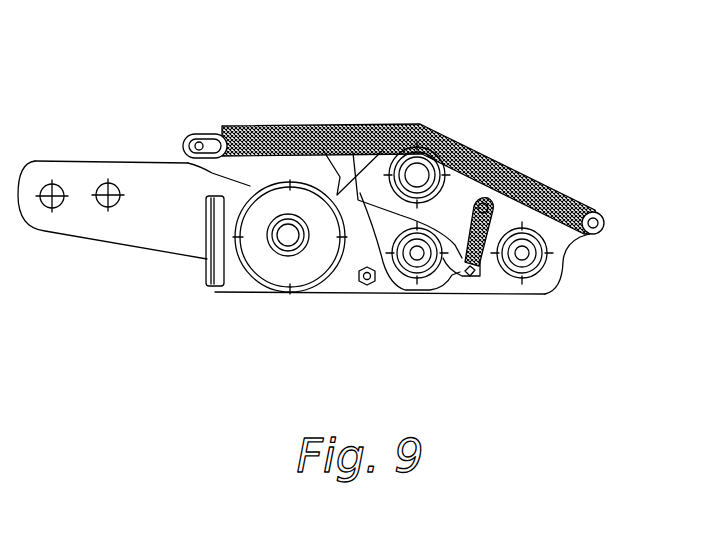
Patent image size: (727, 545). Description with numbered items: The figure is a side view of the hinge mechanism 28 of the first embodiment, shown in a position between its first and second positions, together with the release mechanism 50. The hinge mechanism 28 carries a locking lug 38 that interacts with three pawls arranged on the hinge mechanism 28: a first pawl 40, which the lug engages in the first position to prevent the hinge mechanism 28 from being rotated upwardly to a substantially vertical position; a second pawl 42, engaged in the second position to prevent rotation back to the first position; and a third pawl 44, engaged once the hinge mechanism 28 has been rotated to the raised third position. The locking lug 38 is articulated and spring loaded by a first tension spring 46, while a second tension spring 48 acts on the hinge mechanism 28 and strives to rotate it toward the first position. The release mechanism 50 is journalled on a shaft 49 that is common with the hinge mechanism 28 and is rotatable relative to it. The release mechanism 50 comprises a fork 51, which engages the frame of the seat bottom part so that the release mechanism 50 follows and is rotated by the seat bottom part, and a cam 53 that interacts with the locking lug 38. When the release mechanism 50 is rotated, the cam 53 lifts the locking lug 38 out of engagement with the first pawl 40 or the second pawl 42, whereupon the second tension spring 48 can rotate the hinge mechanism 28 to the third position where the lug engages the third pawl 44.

The hinge mechanism 28 is at (75, 162).
The locking lug 38 is at (380, 170).
The first pawl 40 is at (340, 123).
The second pawl 42 is at (337, 247).
The third pawl 44 is at (262, 130).
The first tension spring 46 is at (487, 255).
The second tension spring 48 is at (505, 160).
The common shaft 49 is at (287, 236).
The release mechanism 50 is at (238, 278).
The fork 51 is at (205, 275).
The cam 53 is at (167, 140).